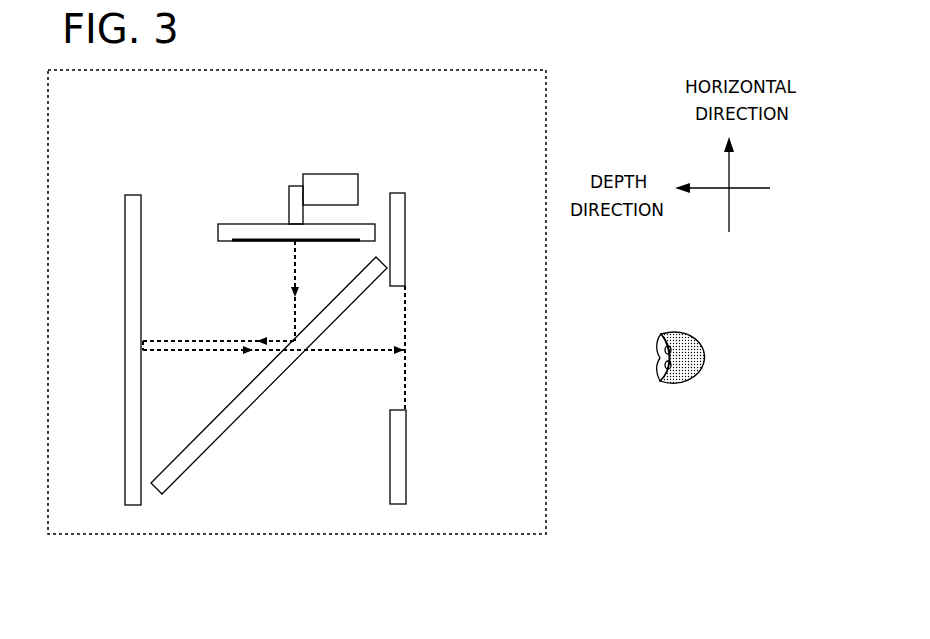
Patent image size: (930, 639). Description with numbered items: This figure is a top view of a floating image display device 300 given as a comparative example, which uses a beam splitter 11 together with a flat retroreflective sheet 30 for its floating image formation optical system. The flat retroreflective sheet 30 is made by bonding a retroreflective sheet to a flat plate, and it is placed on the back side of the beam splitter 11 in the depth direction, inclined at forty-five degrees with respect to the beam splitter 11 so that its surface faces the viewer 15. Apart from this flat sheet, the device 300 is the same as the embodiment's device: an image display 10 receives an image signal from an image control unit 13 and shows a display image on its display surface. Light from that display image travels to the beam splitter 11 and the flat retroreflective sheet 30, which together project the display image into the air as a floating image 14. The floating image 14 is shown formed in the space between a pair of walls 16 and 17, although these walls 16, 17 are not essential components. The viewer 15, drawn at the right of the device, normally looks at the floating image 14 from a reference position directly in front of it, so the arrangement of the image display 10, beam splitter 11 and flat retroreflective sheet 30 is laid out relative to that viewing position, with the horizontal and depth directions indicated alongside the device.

The floating image display device 300 is at (281, 534).
The flat retroreflective sheet 30 is at (141, 245).
The image display 10 is at (248, 223).
The image control unit 13 is at (318, 174).
The wall 17 is at (405, 228).
The floating image 14 is at (405, 317).
The wall 16 is at (406, 442).
The beam splitter 11 is at (257, 402).
The viewer 15 is at (688, 373).